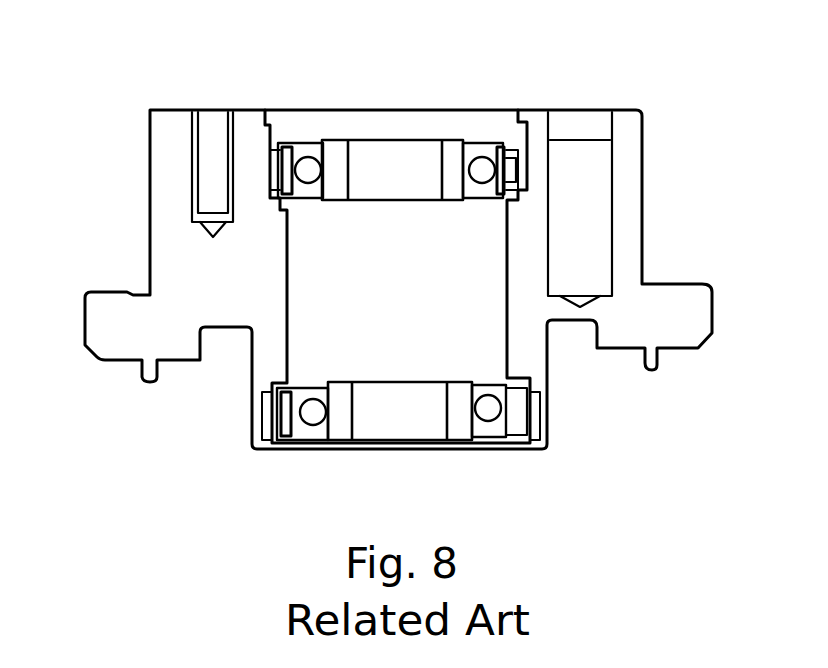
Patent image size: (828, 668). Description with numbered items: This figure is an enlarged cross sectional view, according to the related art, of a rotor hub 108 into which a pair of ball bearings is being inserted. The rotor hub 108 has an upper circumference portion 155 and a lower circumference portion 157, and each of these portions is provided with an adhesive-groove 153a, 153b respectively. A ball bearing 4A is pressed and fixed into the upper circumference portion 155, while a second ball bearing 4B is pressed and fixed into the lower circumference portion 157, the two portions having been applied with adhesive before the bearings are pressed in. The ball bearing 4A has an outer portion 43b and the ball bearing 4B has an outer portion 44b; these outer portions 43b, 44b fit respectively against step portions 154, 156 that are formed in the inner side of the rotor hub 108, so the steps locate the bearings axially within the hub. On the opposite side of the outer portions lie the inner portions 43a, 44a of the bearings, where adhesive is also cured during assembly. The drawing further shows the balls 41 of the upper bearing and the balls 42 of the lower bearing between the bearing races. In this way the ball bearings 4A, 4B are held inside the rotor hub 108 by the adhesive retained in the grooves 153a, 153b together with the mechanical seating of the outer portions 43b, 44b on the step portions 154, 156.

The rotor hub 108 is at (172, 238).
The ball bearing 4A is at (412, 140).
The ball bearing 4B is at (418, 440).
The ball of first bearing 41 is at (308, 176).
The ball of second bearing 42 is at (313, 405).
The inner portion 43a is at (457, 152).
The outer portion 43b is at (290, 143).
The inner portion 44a is at (458, 420).
The outer portion 44b is at (305, 440).
The step portion 154 is at (280, 212).
The upper circumference portion 155 is at (528, 155).
The step portion 156 is at (290, 382).
The lower circumference portion 157 is at (550, 423).
The adhesive-groove 153a is at (530, 168).
The adhesive-groove 153b is at (520, 415).